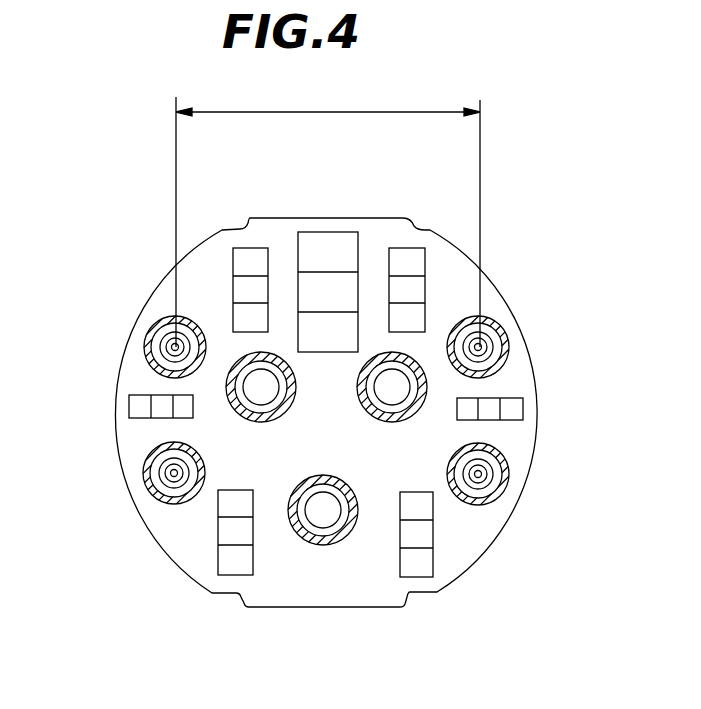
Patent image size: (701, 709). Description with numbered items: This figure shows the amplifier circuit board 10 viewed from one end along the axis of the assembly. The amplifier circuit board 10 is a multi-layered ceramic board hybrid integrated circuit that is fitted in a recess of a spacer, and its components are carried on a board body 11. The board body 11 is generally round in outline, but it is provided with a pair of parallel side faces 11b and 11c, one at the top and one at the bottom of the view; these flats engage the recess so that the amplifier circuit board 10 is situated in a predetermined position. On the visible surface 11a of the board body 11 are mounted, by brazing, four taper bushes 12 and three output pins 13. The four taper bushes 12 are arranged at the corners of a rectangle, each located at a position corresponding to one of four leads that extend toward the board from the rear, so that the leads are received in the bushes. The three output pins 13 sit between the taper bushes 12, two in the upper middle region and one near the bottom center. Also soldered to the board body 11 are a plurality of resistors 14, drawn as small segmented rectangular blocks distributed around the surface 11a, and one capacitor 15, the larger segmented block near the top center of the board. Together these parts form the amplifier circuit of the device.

The amplifier circuit board 10 is at (534, 153).
The board body 11 is at (457, 267).
The surface of board body 11a is at (190, 283).
The side face of board body 11b is at (357, 218).
The side face of board body 11c is at (378, 608).
The taper bush 12 is at (138, 338).
The output pin 13 is at (224, 388).
The resistor 14 is at (523, 410).
The capacitor 15 is at (326, 240).